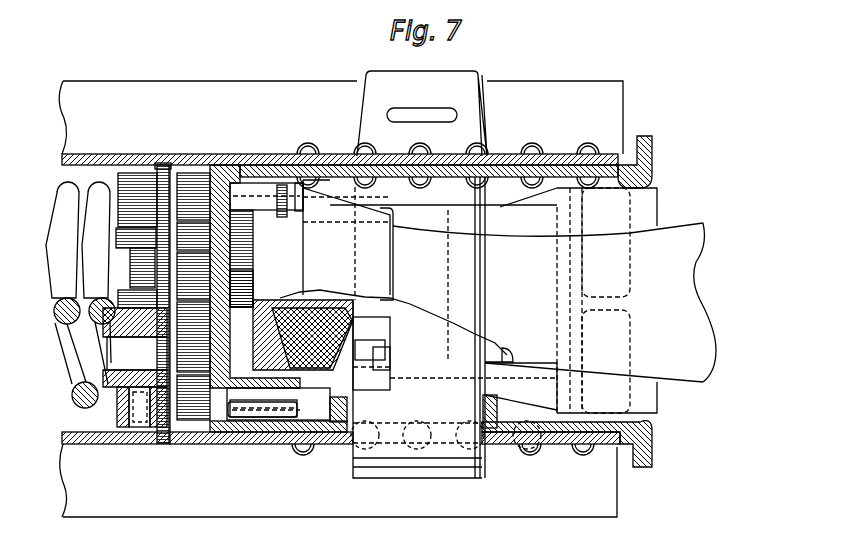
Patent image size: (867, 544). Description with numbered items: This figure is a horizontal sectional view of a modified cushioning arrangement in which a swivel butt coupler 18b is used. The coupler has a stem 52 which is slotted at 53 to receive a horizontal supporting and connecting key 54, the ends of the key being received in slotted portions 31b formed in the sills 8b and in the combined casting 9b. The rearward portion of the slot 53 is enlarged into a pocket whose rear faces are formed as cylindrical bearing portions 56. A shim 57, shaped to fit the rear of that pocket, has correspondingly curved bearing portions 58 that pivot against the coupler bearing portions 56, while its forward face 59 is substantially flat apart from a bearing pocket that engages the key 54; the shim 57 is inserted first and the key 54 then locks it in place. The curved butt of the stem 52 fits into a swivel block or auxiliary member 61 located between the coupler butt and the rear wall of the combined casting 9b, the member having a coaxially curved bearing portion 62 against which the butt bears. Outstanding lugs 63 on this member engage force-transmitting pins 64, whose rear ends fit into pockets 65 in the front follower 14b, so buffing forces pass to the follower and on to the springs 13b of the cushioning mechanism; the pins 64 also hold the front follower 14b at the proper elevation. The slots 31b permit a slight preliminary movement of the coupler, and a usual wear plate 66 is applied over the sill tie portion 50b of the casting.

The sill 8b is at (248, 154).
The combined casting 9b is at (332, 170).
The sill tie portion 50b is at (623, 187).
The slotted portions 31b is at (348, 440).
The springs 13b is at (64, 246).
The front follower 14b is at (165, 168).
The pockets 65 is at (133, 167).
The force-transmitting pins 64 is at (255, 213).
The outstanding lugs 63 is at (298, 193).
The swivel block or auxiliary member 61 is at (307, 297).
The cylindrical bearing portions 56 is at (298, 307).
The curved bearing portions 58 is at (327, 326).
The forward face 59 is at (413, 323).
The shim 57 is at (368, 350).
The coaxially curved bearing portion 62 is at (353, 397).
The horizontal supporting and connecting key 54 is at (482, 473).
The slot 53 is at (492, 347).
The stem 52 is at (485, 386).
The wear plate 66 is at (657, 398).
The swivel butt coupler 18b is at (693, 268).